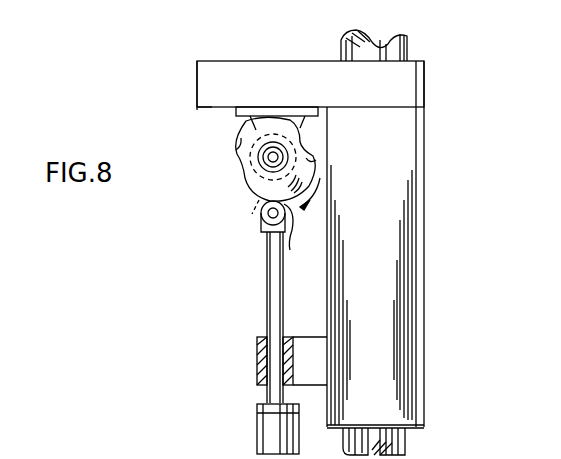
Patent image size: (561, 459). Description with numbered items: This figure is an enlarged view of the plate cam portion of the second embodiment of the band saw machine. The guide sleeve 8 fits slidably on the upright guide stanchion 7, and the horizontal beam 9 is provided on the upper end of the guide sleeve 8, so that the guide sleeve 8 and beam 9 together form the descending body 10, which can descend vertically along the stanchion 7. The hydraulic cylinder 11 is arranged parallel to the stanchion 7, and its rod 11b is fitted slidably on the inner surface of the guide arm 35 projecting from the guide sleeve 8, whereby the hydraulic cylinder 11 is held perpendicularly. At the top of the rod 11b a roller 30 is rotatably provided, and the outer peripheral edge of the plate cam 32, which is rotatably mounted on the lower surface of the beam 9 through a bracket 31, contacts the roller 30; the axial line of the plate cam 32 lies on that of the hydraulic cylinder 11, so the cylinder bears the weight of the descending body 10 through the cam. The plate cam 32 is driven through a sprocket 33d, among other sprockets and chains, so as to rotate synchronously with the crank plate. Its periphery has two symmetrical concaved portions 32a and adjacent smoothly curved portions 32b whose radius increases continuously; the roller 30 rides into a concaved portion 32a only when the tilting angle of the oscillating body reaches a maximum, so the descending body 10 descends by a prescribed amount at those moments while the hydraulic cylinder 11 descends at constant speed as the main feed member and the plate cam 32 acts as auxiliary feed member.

The guide stanchion 7 is at (402, 433).
The guide sleeve 8 is at (412, 366).
The horizontal beam 9 is at (258, 80).
The descending body 10 is at (297, 60).
The hydraulic cylinder 11 is at (256, 427).
The rod 11b is at (270, 282).
The roller 30 is at (291, 246).
The bracket 31 is at (248, 118).
The plate cam 32 is at (239, 143).
The concaved portion 32a is at (243, 172).
The smoothly curved portion 32b is at (246, 195).
The sprocket 33d is at (262, 212).
The guide arm 35 is at (258, 360).